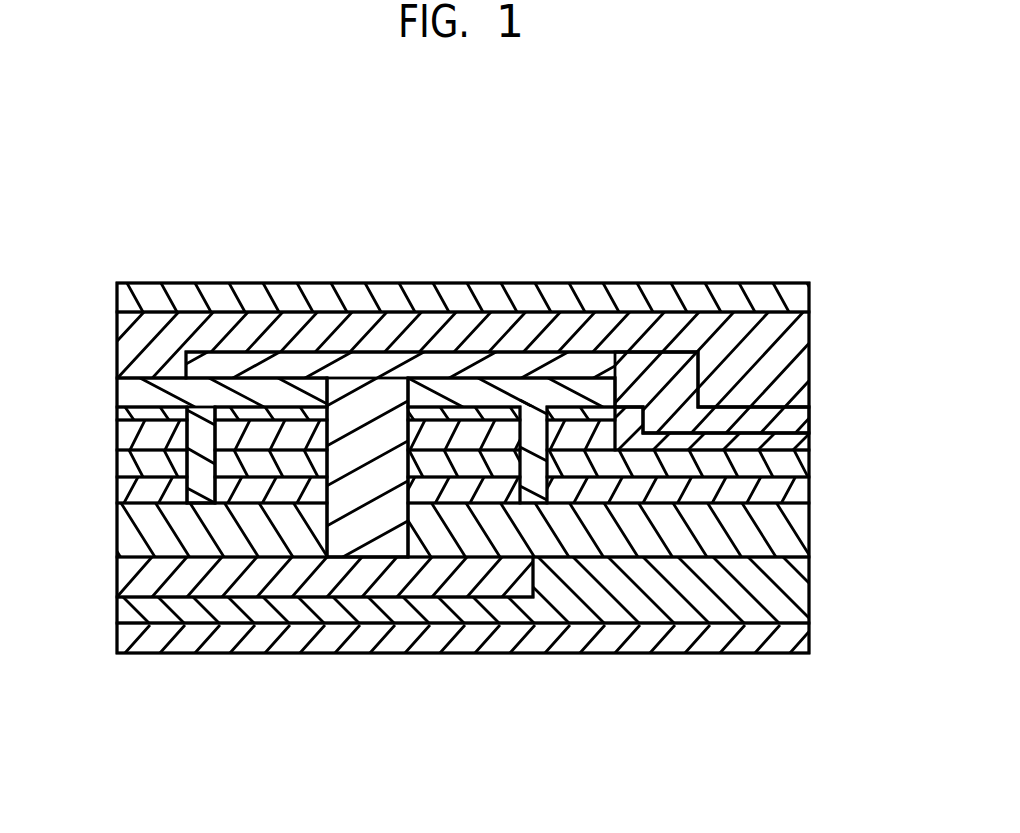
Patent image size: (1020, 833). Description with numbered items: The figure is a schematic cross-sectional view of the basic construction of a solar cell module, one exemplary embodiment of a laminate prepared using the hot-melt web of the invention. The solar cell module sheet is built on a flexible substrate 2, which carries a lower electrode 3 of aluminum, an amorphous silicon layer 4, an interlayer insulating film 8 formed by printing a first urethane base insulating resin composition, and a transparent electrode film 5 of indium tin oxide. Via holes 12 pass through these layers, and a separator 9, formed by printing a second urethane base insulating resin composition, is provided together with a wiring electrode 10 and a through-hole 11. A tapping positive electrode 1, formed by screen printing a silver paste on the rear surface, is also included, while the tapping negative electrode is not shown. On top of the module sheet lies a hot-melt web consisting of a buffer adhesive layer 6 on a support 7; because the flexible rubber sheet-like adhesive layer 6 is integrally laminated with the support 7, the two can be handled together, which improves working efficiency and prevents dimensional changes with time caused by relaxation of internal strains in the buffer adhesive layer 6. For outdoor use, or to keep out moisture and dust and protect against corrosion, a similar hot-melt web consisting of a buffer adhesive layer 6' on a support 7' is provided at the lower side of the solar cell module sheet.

The tapping positive electrode 1 is at (117, 578).
The flexible substrate 2 is at (809, 537).
The lower electrode 3 is at (809, 489).
The amorphous silicon layer 4 is at (809, 463).
The transparent electrode film 5 is at (809, 437).
The buffer adhesive layer 6 is at (471, 372).
The buffer adhesive layer 6' is at (496, 593).
The support 7 is at (507, 292).
The support 7' is at (513, 646).
The interlayer insulating film 8 is at (117, 440).
The separator 9 is at (117, 397).
The wiring electrode 10 is at (809, 413).
The through-hole 11 is at (363, 557).
The via holes 12 is at (200, 507).